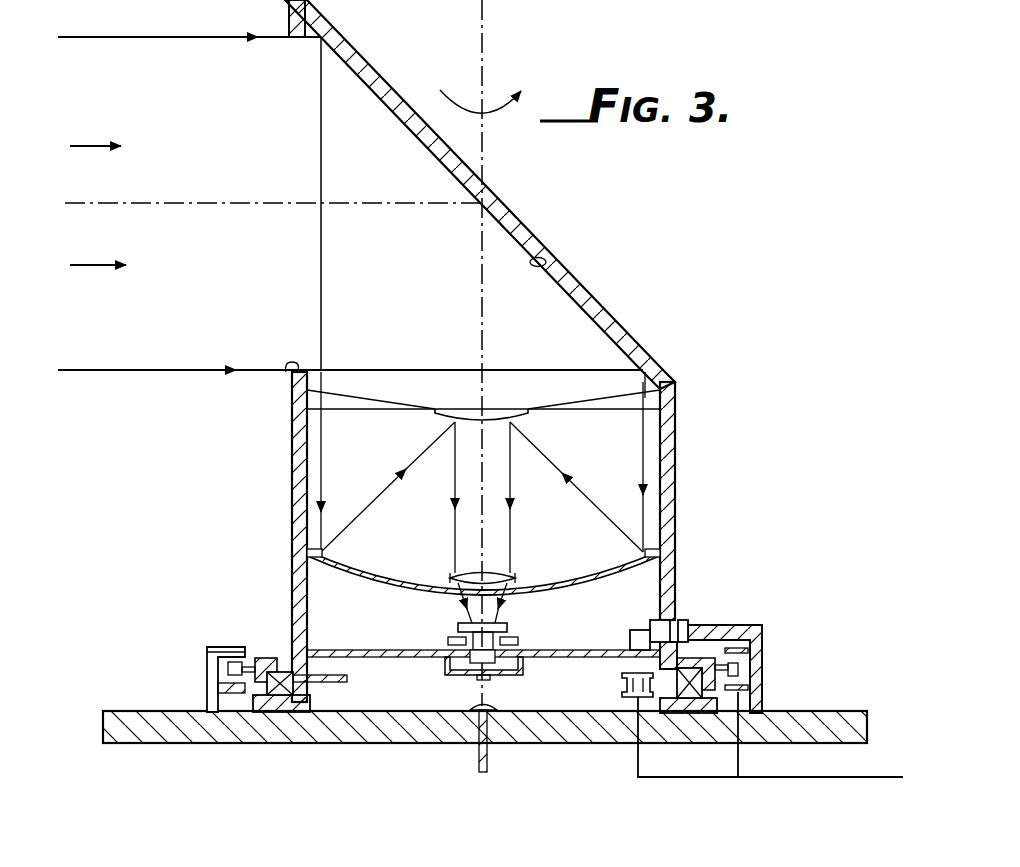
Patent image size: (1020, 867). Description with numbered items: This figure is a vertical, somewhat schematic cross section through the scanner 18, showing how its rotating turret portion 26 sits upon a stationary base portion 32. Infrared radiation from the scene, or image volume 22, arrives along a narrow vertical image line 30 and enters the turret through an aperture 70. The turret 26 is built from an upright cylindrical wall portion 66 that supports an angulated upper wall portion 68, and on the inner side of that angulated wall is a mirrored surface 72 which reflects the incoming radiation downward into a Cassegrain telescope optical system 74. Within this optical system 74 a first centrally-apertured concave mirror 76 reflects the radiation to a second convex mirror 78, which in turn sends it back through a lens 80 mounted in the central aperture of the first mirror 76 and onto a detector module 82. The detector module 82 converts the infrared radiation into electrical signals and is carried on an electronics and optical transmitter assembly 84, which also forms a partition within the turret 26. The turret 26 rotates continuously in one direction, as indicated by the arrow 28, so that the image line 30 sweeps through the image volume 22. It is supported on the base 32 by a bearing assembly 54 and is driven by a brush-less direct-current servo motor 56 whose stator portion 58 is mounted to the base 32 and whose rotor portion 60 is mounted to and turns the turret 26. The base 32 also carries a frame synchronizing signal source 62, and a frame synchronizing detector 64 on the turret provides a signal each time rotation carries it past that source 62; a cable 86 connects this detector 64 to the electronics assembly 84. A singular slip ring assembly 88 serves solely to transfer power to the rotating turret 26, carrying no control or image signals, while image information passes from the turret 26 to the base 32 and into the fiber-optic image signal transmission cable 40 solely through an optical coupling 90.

The scanner 18 is at (503, 408).
The image volume 22 is at (86, 266).
The turret portion 26 is at (455, 205).
The arrow 28 is at (444, 92).
The image line 30 is at (210, 166).
The base portion 32 is at (763, 702).
The fiber-optic image signal transmission cable 40 is at (488, 759).
The bearing assembly 54 is at (283, 670).
The servo motor 56 is at (209, 656).
The stator portion 58 is at (228, 690).
The rotor portion 60 is at (228, 668).
The frame synchronizing signal source 62 is at (688, 623).
The frame synchronizing detector 64 is at (667, 620).
The upright cylindrical wall portion 66 is at (297, 528).
The angulated upper wall portion 68 is at (621, 334).
The aperture 70 is at (288, 368).
The mirrored surface 72 is at (548, 262).
The Cassegrain telescope optical system 74 is at (609, 455).
The first centrally-apertured concave mirror 76 is at (590, 579).
The second convex mirror 78 is at (527, 421).
The lens 80 is at (450, 577).
The detector module 82 is at (514, 626).
The electronics and optical transmitter assembly 84 is at (417, 652).
The cable 86 is at (643, 630).
The slip ring assembly 88 is at (621, 687).
The optical coupling 90 is at (473, 690).